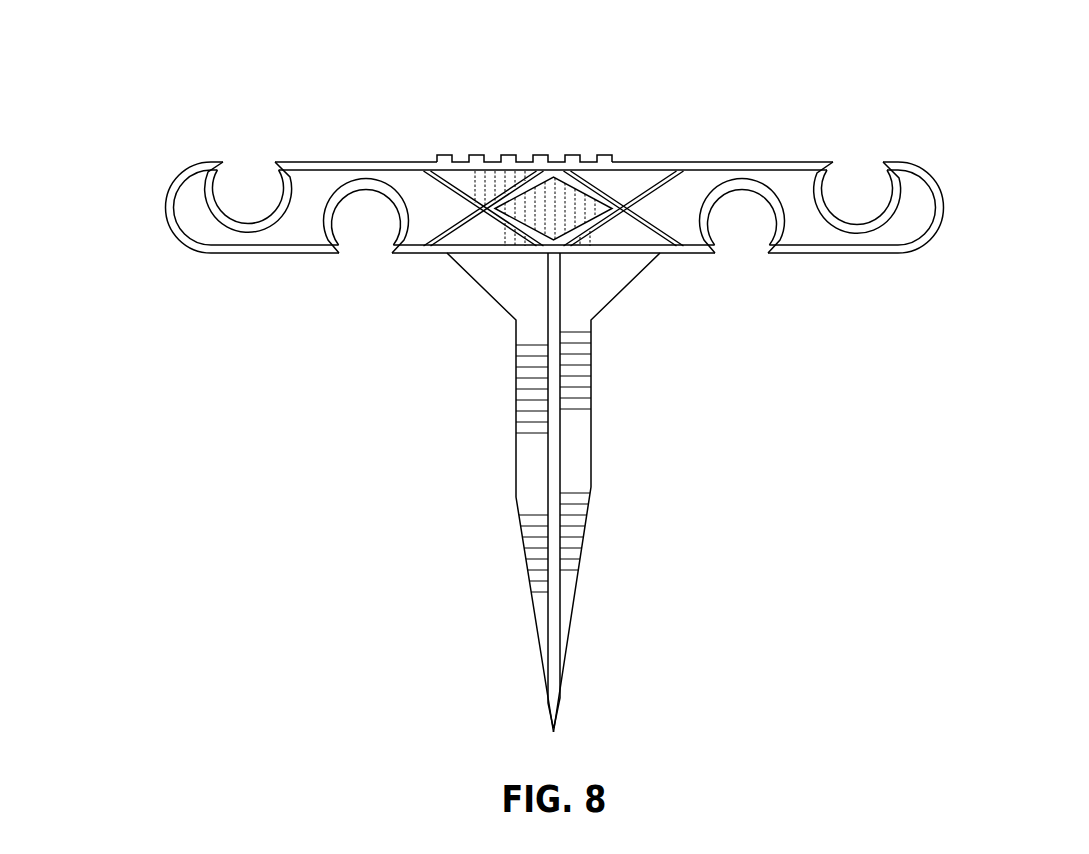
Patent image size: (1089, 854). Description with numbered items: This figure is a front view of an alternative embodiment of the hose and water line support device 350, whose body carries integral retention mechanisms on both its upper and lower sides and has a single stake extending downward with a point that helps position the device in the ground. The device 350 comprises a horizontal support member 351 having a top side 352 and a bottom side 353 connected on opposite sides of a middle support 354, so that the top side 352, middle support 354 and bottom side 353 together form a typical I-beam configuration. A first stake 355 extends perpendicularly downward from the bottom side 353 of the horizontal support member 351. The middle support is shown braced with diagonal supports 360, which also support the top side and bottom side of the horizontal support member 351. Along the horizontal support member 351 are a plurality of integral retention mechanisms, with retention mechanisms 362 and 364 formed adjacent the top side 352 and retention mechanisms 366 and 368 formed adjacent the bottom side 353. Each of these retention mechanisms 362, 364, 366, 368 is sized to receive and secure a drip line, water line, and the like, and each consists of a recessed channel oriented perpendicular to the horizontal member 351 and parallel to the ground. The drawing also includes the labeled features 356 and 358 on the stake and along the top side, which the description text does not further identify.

The hose and water line support device 350 is at (1010, 95).
The horizontal support member 351 is at (227, 255).
The top side 352 is at (737, 162).
The bottom side 353 is at (838, 255).
The middle support 354 is at (557, 162).
The first stake 355 is at (547, 437).
The stem side walls 356 is at (491, 299).
The teeth 358 is at (473, 160).
The diagonal supports 360 is at (610, 190).
The integral retention mechanism 362 is at (242, 186).
The integral retention mechanism 364 is at (862, 186).
The integral retention mechanism 366 is at (366, 240).
The integral retention mechanism 368 is at (742, 240).